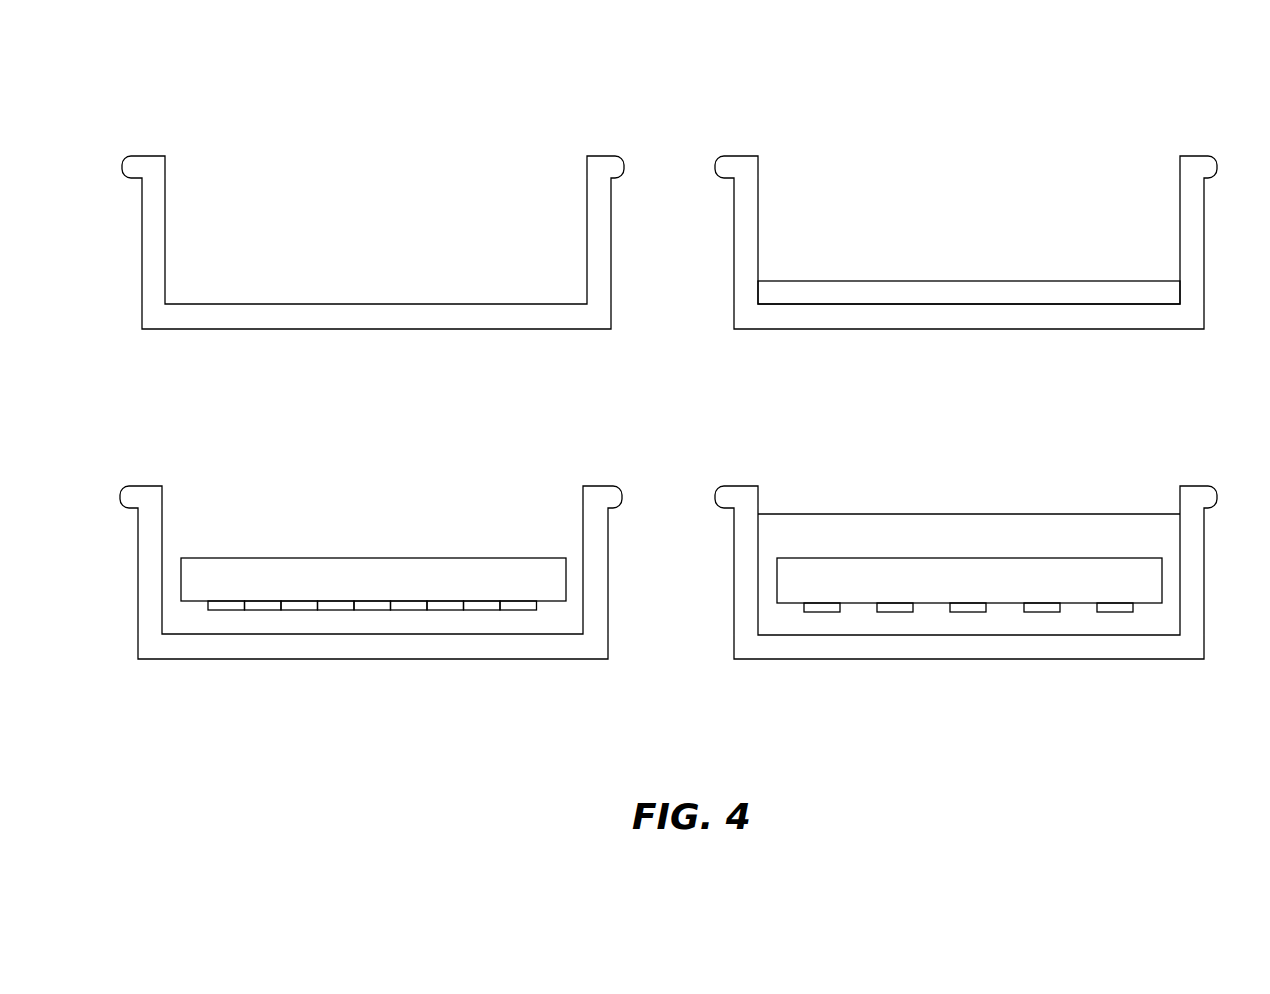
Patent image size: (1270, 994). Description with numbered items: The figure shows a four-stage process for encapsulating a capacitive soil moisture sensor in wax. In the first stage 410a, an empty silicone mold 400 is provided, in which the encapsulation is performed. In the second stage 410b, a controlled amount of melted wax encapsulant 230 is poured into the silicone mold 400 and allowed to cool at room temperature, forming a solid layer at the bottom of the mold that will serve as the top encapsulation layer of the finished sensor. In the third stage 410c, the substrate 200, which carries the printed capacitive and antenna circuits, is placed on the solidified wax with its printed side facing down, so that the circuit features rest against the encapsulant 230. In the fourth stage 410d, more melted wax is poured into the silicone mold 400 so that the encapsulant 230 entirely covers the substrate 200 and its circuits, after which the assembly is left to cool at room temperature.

The first encapsulation stage 410a is at (407, 108).
The second encapsulation stage 410b is at (971, 108).
The third encapsulation stage 410c is at (407, 462).
The fourth encapsulation stage 410d is at (985, 462).
The silicone mold 400 is at (388, 329).
The encapsulant 230 is at (874, 281).
The substrate 200 is at (336, 557).